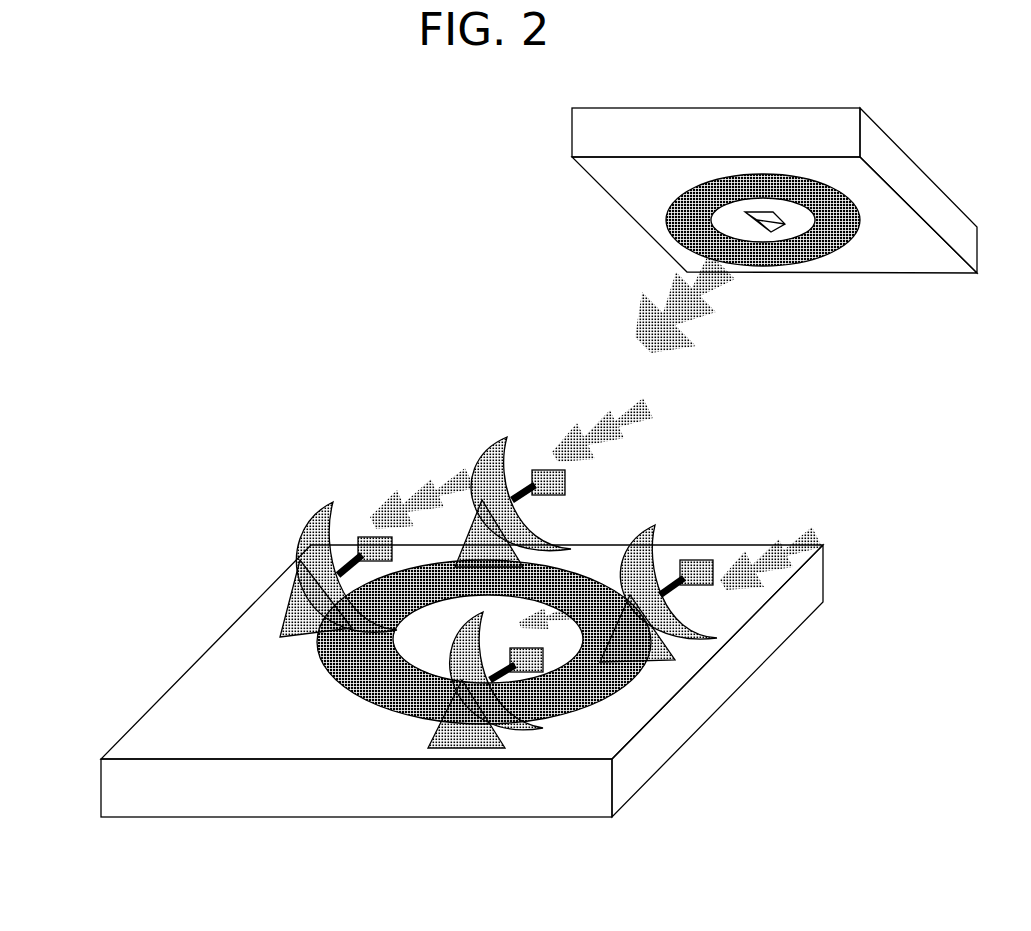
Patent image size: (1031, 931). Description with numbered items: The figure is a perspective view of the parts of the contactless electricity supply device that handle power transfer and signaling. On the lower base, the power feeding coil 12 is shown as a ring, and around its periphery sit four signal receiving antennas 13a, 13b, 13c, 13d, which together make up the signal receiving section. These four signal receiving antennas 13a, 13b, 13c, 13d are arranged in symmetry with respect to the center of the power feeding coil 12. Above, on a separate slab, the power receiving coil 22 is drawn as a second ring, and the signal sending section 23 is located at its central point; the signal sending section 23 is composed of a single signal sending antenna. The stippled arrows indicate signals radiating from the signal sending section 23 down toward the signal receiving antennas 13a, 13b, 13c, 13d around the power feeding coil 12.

The power feeding coil 12 is at (392, 710).
The signal receiving antenna 13a is at (490, 447).
The signal receiving antenna 13b is at (307, 532).
The signal receiving antenna 13c is at (523, 720).
The signal receiving antenna 13d is at (713, 633).
The power receiving coil 22 is at (748, 178).
The signal sending section 23 is at (790, 217).